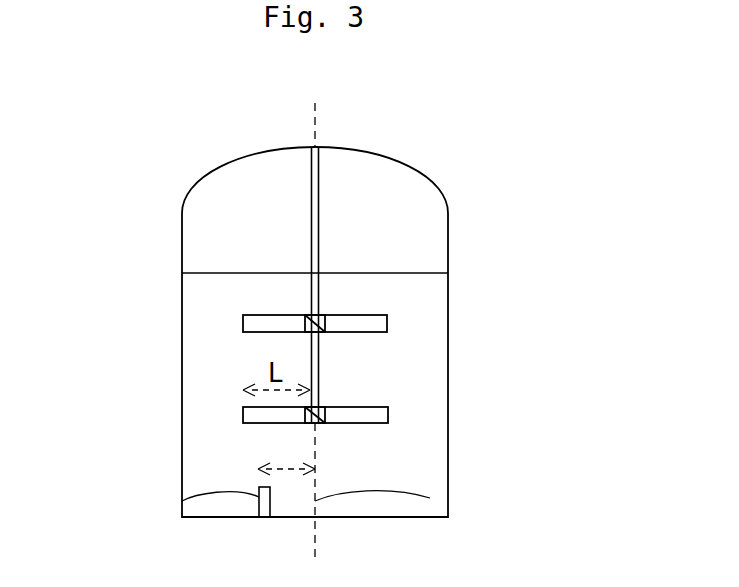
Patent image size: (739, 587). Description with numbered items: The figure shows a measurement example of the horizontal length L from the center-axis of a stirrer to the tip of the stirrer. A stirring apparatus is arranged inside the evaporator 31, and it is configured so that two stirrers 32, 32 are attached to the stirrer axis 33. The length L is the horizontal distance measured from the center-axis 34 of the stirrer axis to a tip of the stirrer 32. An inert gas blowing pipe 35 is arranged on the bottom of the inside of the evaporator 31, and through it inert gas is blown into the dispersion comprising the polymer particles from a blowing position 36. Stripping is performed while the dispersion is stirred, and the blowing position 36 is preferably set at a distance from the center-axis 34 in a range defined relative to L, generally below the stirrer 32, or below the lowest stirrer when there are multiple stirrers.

The evaporator 31 is at (427, 175).
The stirrer 32 is at (378, 404).
The stirrer axis 33 is at (310, 290).
The center-axis 34 is at (430, 498).
The inert gas blowing pipe 35 is at (259, 496).
The blowing position 36 is at (288, 463).